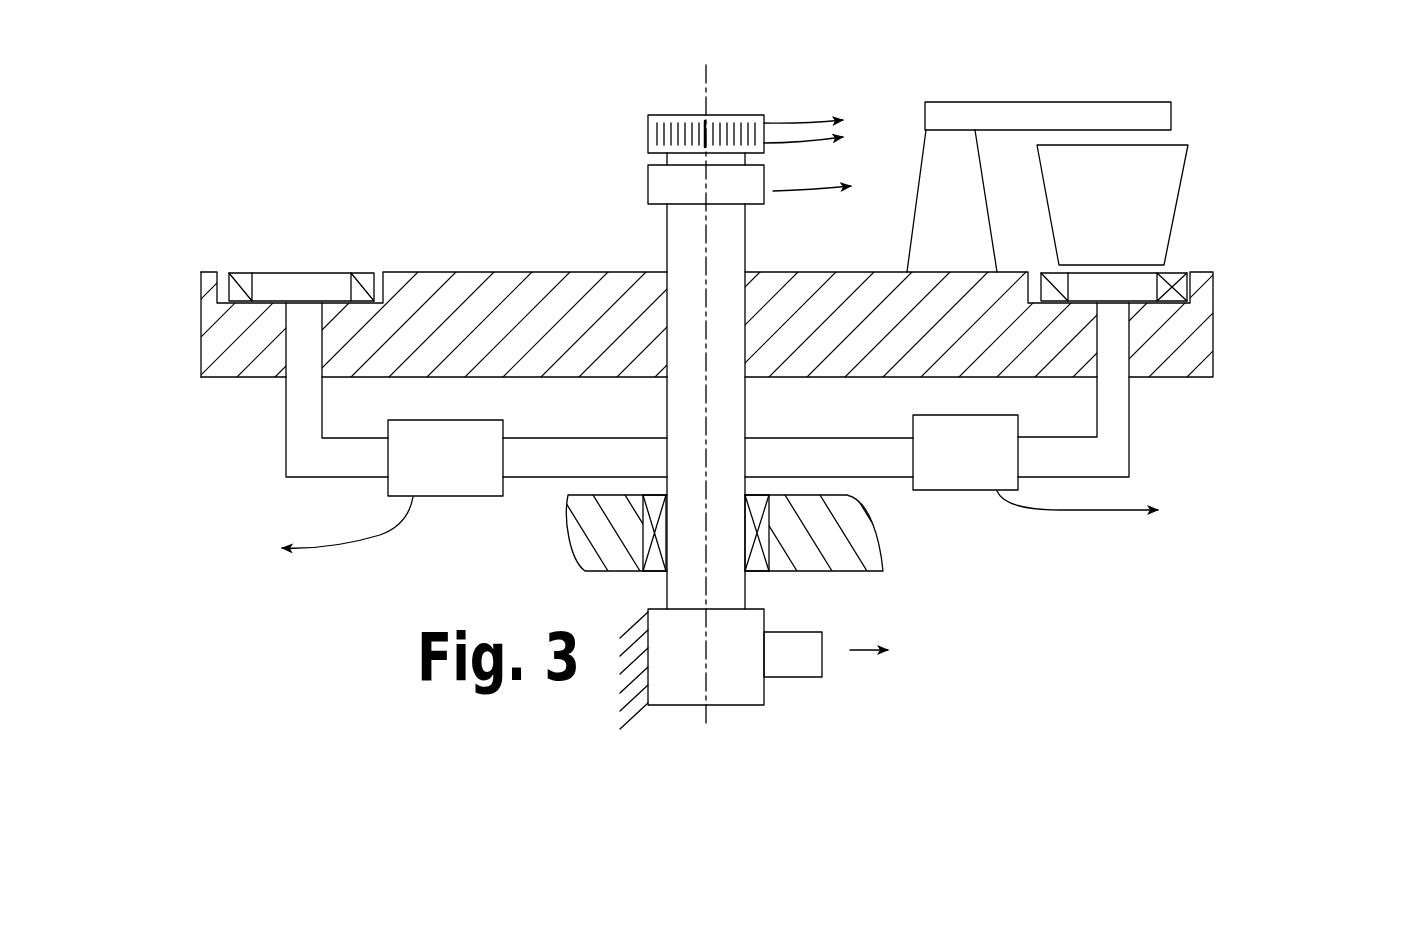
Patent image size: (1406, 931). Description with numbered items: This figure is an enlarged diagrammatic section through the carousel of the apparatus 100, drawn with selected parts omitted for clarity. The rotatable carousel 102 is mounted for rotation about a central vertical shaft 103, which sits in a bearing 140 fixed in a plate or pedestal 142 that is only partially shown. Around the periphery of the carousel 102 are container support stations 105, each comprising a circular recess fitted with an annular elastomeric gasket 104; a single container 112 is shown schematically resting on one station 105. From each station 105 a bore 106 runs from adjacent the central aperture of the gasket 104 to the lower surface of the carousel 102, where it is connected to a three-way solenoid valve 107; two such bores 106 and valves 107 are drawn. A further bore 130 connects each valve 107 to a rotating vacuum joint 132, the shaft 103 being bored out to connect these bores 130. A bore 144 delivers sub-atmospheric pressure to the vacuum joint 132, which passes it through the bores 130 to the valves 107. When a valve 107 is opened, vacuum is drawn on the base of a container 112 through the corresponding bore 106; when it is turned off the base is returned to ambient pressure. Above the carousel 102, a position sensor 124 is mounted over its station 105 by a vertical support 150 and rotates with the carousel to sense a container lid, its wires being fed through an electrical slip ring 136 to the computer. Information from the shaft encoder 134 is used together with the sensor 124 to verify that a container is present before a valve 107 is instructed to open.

The apparatus 100 is at (455, 162).
The carousel 102 is at (1215, 298).
The central vertical shaft 103 is at (748, 398).
The annular elastomeric gasket 104 is at (245, 283).
The container support station 105 is at (1092, 138).
The bore 106 is at (302, 410).
The three-way solenoid valve 107 is at (460, 497).
The container 112 is at (1152, 213).
The position sensor 124 is at (1084, 102).
The bore 130 is at (538, 478).
The rotating vacuum joint 132 is at (688, 706).
The shaft encoder 134 is at (648, 131).
The electrical slip ring 136 is at (648, 188).
The bearing 140 is at (760, 573).
The pedestal 142 is at (868, 548).
The bore 144 is at (800, 678).
The vertical support 150 is at (905, 148).